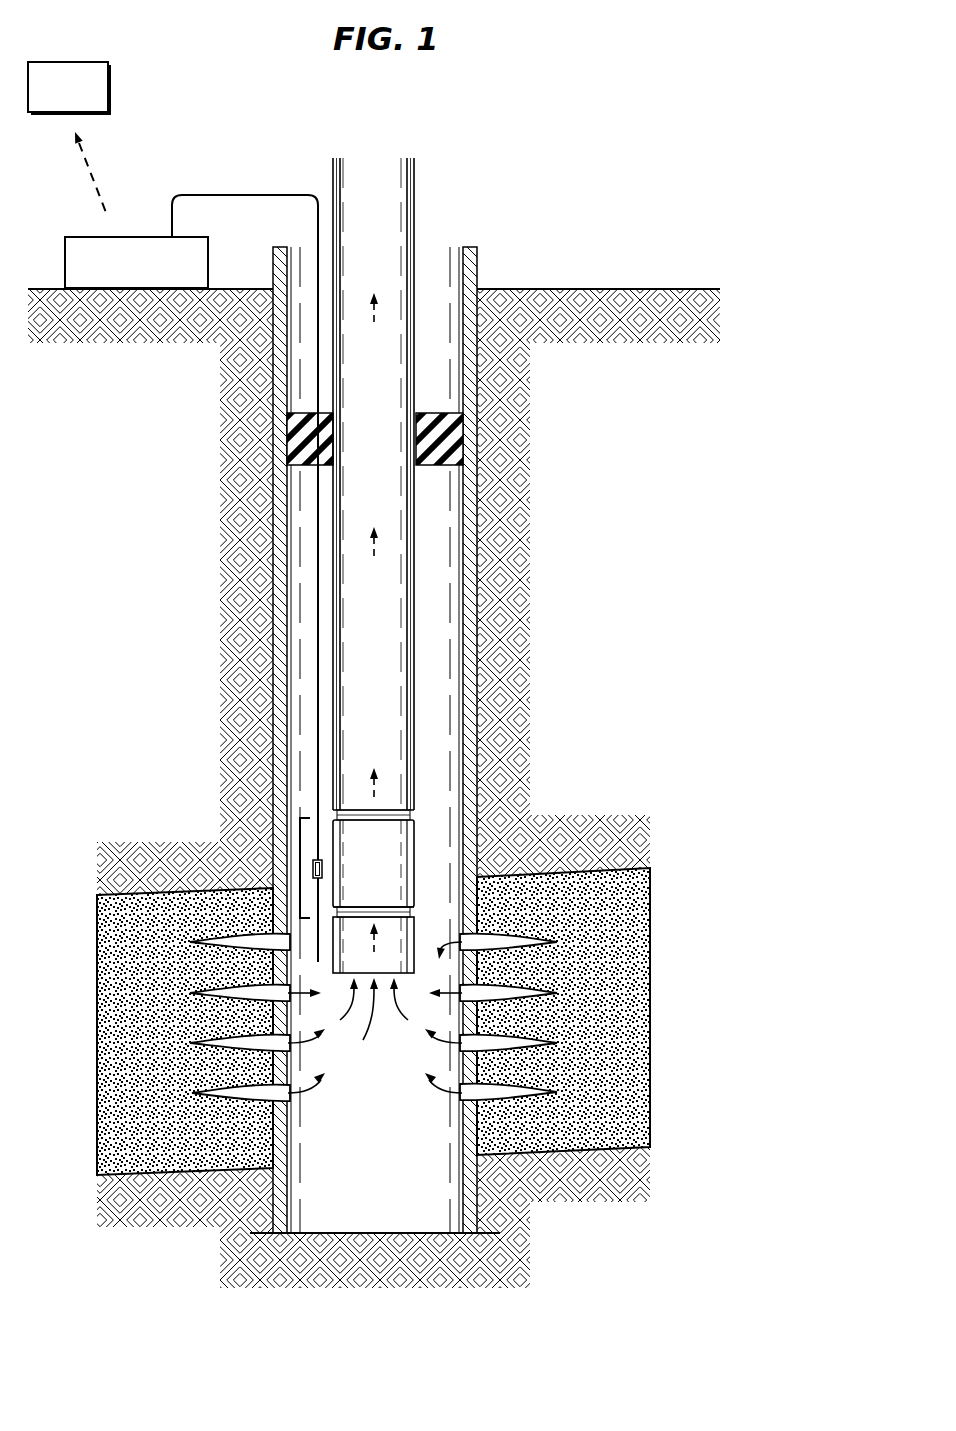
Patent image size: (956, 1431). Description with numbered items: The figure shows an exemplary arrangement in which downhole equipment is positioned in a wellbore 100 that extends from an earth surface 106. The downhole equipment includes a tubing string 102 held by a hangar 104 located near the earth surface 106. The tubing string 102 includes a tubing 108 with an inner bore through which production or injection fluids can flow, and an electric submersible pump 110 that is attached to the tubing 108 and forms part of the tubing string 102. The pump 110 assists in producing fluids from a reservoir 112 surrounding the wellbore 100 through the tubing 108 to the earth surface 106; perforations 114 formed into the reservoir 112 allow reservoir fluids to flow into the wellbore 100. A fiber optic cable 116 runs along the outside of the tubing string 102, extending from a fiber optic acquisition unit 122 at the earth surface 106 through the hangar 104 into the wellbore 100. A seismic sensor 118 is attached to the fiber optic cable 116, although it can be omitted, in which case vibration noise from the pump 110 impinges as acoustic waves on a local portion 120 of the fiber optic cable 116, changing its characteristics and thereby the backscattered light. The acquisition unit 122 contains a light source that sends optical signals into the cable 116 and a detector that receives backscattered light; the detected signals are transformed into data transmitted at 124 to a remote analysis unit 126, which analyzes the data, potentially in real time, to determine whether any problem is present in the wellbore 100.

The wellbore 100 is at (442, 745).
The tubing string 102 is at (431, 520).
The hangar 104 is at (462, 430).
The earth surface 106 is at (612, 289).
The tubing 108 is at (417, 598).
The electric submersible pump 110 is at (416, 840).
The reservoir 112 is at (632, 1127).
The perforations 114 is at (190, 995).
The fiber optic cable 116 is at (322, 715).
The seismic sensor 118 is at (322, 871).
The local portion of the fiber optic cable 120 is at (300, 870).
The fiber optic acquisition unit 122 is at (160, 283).
The data transmission 124 is at (91, 173).
The remote analysis unit 126 is at (90, 102).